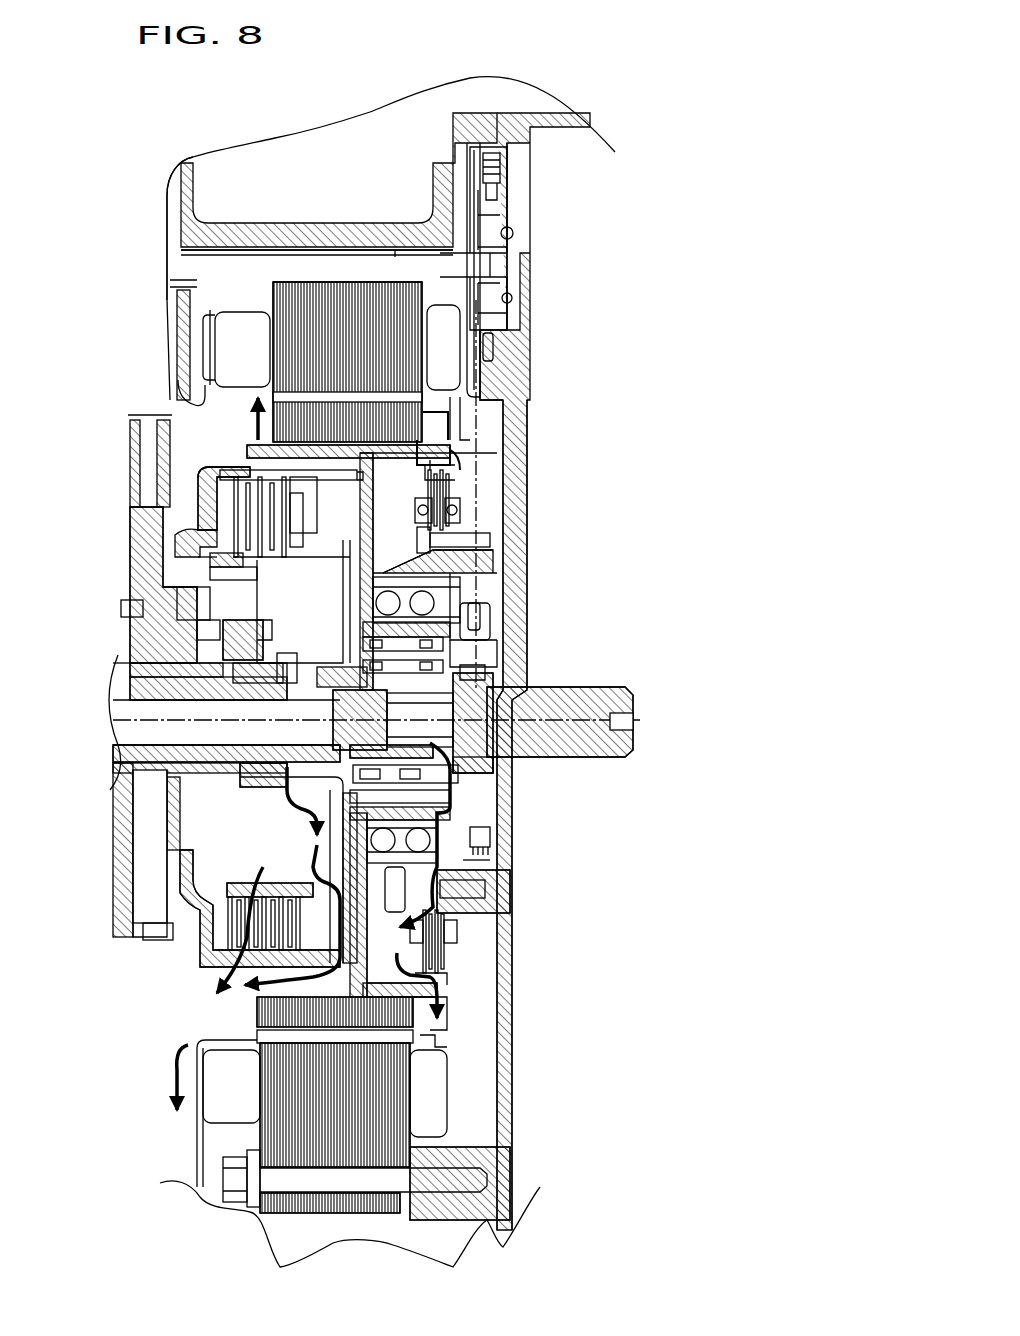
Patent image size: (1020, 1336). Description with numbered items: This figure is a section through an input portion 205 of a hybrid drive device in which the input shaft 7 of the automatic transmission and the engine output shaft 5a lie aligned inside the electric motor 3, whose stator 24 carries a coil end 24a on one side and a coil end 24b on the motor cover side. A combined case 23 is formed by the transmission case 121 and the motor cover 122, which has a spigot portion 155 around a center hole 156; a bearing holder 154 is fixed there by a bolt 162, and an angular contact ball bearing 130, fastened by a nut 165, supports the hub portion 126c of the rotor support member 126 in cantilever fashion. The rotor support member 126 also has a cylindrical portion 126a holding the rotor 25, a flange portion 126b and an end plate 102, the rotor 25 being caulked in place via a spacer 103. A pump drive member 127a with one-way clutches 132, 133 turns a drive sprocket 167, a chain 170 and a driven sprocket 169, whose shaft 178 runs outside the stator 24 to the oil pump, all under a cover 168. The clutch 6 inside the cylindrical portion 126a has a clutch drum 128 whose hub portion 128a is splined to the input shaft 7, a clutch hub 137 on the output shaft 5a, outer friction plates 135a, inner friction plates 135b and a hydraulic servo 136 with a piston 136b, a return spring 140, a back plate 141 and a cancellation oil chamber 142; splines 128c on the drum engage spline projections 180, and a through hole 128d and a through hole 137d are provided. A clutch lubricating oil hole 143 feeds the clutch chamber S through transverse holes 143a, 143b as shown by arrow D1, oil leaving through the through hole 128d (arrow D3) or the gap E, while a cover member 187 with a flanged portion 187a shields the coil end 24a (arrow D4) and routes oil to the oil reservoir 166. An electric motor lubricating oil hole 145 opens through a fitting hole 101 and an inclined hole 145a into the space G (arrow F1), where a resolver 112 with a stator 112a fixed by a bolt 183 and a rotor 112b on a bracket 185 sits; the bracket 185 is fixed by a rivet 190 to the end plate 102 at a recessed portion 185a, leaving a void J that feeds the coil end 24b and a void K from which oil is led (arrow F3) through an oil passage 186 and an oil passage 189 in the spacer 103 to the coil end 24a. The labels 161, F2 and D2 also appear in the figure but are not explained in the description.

The input portion 205 is at (97, 157).
The combined case 23 is at (385, 618).
The transmission case 121 is at (453, 108).
The motor cover 122 is at (529, 635).
The electric motor 3 is at (265, 283).
The stator 24 is at (345, 290).
The coil end 24a is at (238, 320).
The coil end 24b is at (433, 1087).
The shaft 178 is at (395, 258).
The driven sprocket 169 is at (482, 192).
The cover 168 is at (500, 328).
The chain 170 is at (517, 353).
The rivet 190 is at (495, 392).
The recessed portion 185a is at (460, 428).
The bracket 185 is at (460, 450).
The cover member 187 is at (207, 327).
The flanged portion 187a is at (296, 392).
The oil passage 186 is at (300, 378).
The arrow F3 is at (438, 350).
The rotor 25 is at (395, 440).
The spacer 103 is at (266, 447).
The oil passage 189 is at (245, 440).
The cylindrical portion 126a is at (253, 462).
The through hole 128d is at (210, 470).
The K0 clutch 6 is at (190, 512).
The clutch drum 128 is at (198, 543).
The piston 136b is at (205, 552).
The hydraulic servo 136 is at (227, 583).
The return spring 140 is at (121, 606).
The hub portion 128a is at (240, 658).
The input shaft 7 is at (125, 690).
The clutch lubricating oil hole 143 is at (125, 700).
The transverse hole 143a is at (292, 706).
The transverse hole 143b is at (293, 672).
The electric motor lubricating oil hole 145 is at (115, 738).
The inclined hole 145a is at (490, 690).
The fitting hole 101 is at (453, 707).
The output shaft 5a is at (633, 700).
The center hole 156 is at (497, 745).
The one-way clutch 133 is at (477, 783).
The one-way clutch 132 is at (477, 793).
The bearing 161 is at (447, 833).
The nut 165 is at (423, 840).
The angular contact ball bearing 130 is at (447, 905).
The arrow F1 is at (477, 920).
The resolver 112 is at (447, 950).
The stator 112a is at (432, 540).
The rotor 112b is at (443, 957).
The second friction engagement device F2 is at (437, 980).
The end plate 102 is at (440, 1030).
The void portion J is at (445, 1043).
The oil reservoir 166 is at (467, 1240).
The bolt 162 is at (395, 867).
The space G is at (393, 905).
The arrow D1 is at (300, 812).
The oil flow direction D2 is at (330, 905).
The arrow D3 is at (225, 990).
The arrow D4 is at (168, 1078).
The through hole 137d is at (265, 887).
The spline projections 180 is at (320, 977).
The cancellation oil chamber 142 is at (185, 850).
The splines 128c is at (205, 972).
The outer friction plates 135a is at (287, 497).
The inner friction plates 135b is at (275, 556).
The clutch hub 137 is at (273, 565).
The gap E is at (380, 461).
The clutch chamber S is at (336, 609).
The back plate 141 is at (272, 628).
The void portion K is at (460, 473).
The rotor support member 126 is at (440, 500).
The flange portion 126b is at (440, 520).
The hub portion 126c is at (432, 622).
The bolt 183 is at (460, 540).
The bearing holder 154 is at (445, 575).
The spigot portion 155 is at (470, 586).
The drive sprocket 167 is at (487, 624).
The pump drive member 127a is at (470, 660).